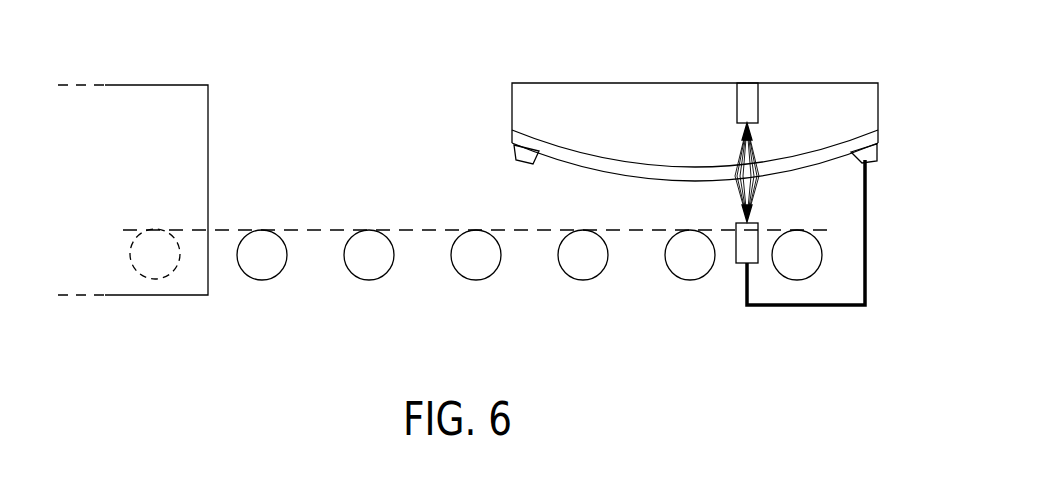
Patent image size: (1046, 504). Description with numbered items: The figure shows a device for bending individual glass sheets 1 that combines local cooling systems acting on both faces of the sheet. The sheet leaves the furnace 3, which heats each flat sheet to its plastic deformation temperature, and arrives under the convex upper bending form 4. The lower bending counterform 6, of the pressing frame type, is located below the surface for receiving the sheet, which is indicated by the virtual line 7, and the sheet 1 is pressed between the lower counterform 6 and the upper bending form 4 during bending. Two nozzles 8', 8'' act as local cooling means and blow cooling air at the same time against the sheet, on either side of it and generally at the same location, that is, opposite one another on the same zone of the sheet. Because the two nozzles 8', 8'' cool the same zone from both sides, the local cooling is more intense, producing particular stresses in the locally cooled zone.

The glass sheet 1 is at (645, 181).
The furnace 3 is at (152, 130).
The upper bending form 4 is at (572, 108).
The lower bending counterform 6 is at (518, 155).
The virtual line 7 is at (307, 230).
The nozzle 8' is at (784, 263).
The nozzle 8'' is at (693, 121).